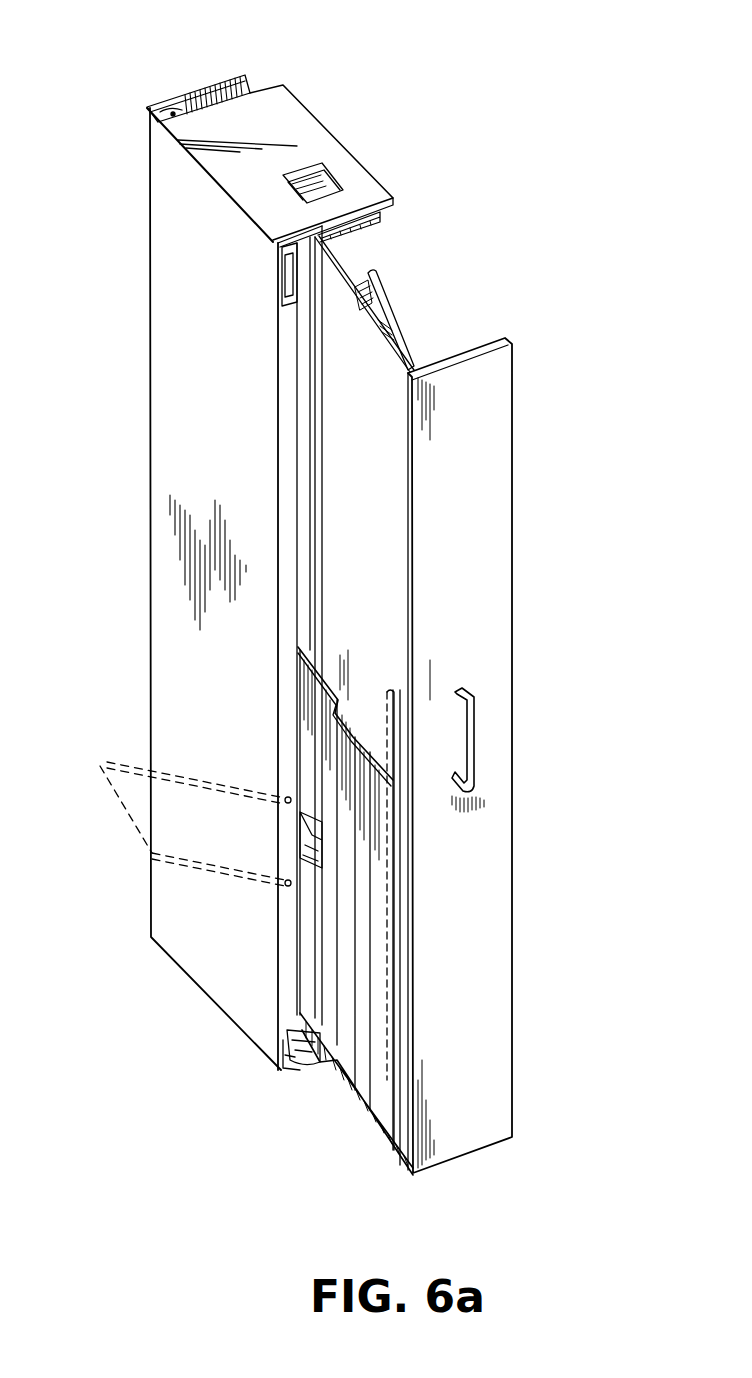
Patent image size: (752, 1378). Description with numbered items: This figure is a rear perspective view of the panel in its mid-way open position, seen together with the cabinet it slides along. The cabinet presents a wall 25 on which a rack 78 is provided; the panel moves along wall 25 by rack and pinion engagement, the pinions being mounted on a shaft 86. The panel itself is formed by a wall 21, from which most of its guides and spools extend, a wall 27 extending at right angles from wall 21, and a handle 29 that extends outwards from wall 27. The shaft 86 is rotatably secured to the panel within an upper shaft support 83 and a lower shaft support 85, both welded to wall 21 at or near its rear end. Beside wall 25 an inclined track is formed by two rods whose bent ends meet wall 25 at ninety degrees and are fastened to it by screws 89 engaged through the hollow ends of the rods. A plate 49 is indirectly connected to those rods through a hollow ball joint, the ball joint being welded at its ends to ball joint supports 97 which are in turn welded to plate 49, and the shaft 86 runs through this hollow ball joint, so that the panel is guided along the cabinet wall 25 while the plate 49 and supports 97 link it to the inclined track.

The wall 25 is at (153, 146).
The upper shaft support 83 is at (305, 240).
The shaft 86 is at (290, 278).
The wall 21 is at (348, 302).
The wall 27 is at (495, 400).
The handle 29 is at (477, 747).
The screws 89 is at (287, 886).
The plate 49 is at (378, 822).
The ball joint supports 97 is at (318, 832).
The rack 78 is at (290, 1063).
The lower shaft support 85 is at (333, 1060).